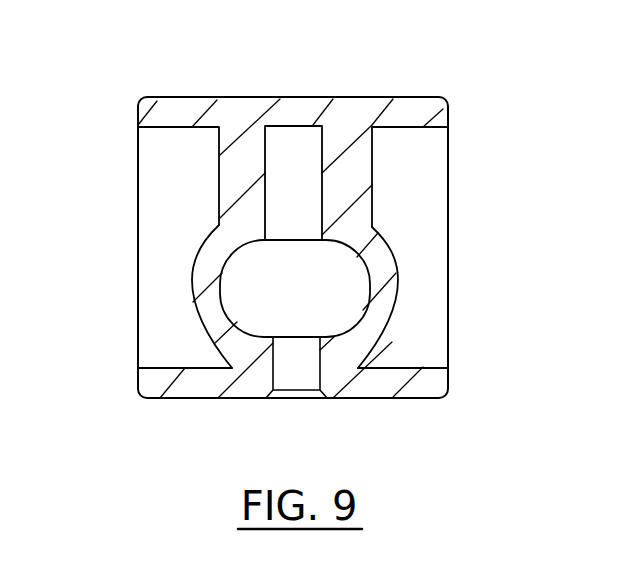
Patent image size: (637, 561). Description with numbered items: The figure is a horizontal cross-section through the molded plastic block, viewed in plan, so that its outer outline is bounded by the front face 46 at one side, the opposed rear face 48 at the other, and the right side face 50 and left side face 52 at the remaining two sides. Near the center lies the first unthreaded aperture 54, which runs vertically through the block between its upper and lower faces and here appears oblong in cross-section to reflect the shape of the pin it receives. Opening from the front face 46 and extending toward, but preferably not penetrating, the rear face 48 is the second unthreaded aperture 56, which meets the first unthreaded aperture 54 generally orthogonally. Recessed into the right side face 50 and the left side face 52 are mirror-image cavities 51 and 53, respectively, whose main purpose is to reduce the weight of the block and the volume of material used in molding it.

The front face 46 is at (185, 398).
The rear face 48 is at (352, 97).
The right side face 50 is at (118, 207).
The cavity 51 is at (163, 300).
The left side face 52 is at (478, 215).
The cavity 53 is at (420, 160).
The first unthreaded aperture 54 is at (362, 292).
The second unthreaded aperture 56 is at (282, 157).